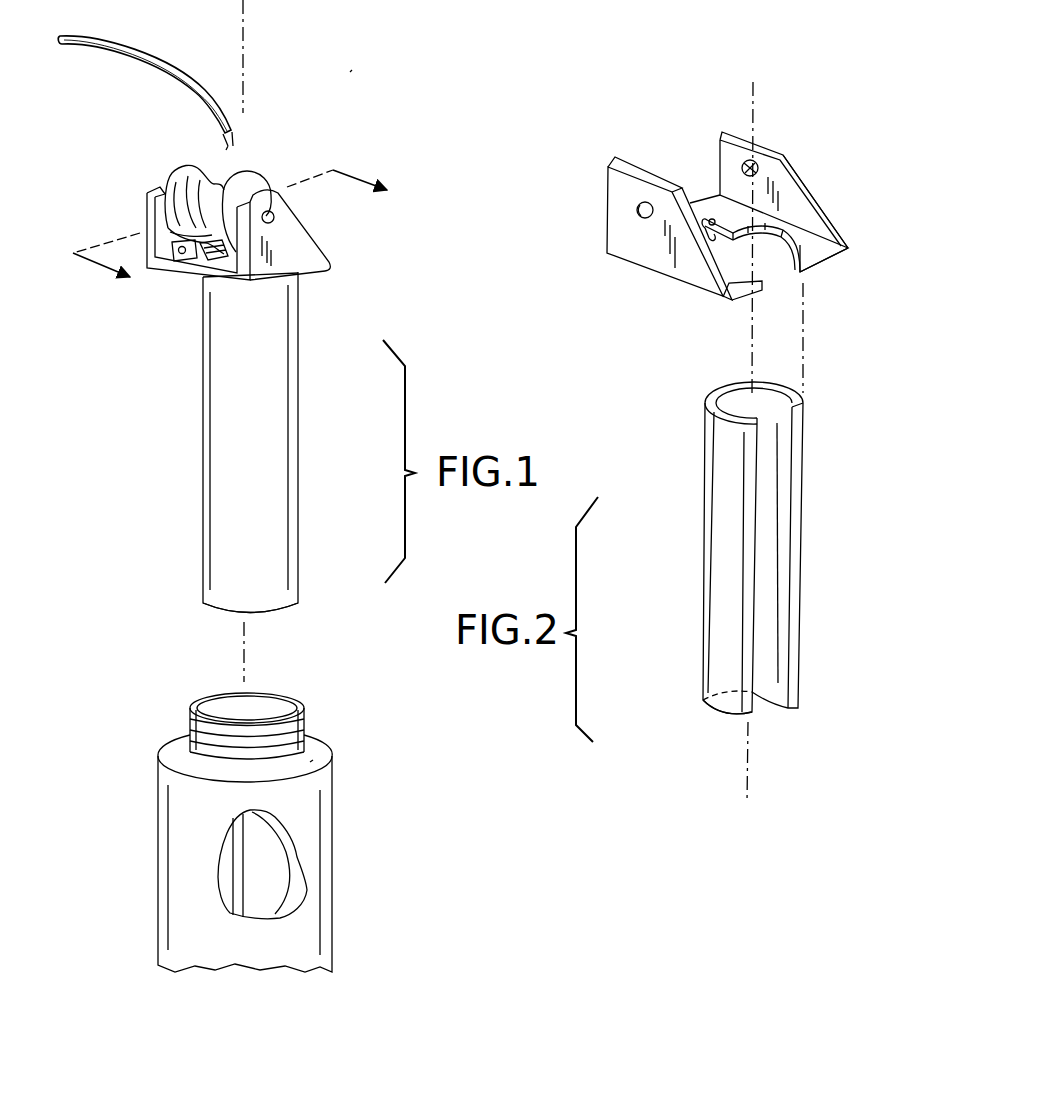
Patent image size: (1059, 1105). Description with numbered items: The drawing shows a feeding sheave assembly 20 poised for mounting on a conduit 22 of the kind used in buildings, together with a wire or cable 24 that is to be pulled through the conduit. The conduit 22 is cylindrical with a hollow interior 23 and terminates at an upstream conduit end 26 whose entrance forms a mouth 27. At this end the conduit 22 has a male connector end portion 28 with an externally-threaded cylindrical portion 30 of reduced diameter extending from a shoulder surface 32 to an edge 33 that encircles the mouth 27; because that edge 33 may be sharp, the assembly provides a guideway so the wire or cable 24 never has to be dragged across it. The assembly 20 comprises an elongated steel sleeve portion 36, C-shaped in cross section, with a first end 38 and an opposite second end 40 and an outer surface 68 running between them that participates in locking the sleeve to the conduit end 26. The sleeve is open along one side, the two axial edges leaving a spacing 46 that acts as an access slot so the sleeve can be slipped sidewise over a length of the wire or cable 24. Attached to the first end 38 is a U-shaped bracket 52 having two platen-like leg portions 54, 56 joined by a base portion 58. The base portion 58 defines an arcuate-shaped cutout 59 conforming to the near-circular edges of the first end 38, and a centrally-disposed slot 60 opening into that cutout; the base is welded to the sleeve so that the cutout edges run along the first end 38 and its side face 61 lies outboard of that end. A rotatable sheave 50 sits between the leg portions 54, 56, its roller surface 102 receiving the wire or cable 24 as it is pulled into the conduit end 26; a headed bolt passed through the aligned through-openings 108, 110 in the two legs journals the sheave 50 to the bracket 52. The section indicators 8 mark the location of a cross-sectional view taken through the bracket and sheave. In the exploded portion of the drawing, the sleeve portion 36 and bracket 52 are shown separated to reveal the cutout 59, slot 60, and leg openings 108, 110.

In FIG. 1, the feeding sheave assembly 20 is at (352, 70).
In FIG. 1, the section line 8 is at (240, 237).
In FIG. 1, the conduit 22 is at (176, 846).
In FIG. 1, the hollow interior 23 is at (290, 870).
In FIG. 1, the wire or cable 24 is at (120, 62).
In FIG. 1, the conduit end 26 is at (306, 712).
In FIG. 1, the mouth 27 is at (223, 708).
In FIG. 1, the male connector end portion 28 is at (192, 726).
In FIG. 1, the externally-threaded cylindrical portion 30 is at (306, 734).
In FIG. 1, the shoulder surface 32 is at (315, 760).
In FIG. 1, the edge 33 is at (196, 708).
In FIG. 1, the sleeve portion 36 is at (235, 478).
In FIG. 2, the sleeve portion 36 is at (720, 556).
In FIG. 1, the first end 38 is at (285, 288).
In FIG. 2, the first end 38 is at (793, 383).
In FIG. 1, the second end 40 is at (275, 617).
In FIG. 2, the second end 40 is at (775, 700).
In FIG. 2, the spacing 46 is at (785, 502).
In FIG. 1, the sheave 50 is at (250, 170).
In FIG. 1, the bracket 52 is at (295, 245).
In FIG. 2, the bracket 52 is at (805, 185).
In FIG. 2, the leg portion 54 is at (620, 230).
In FIG. 2, the leg portion 56 is at (823, 207).
In FIG. 2, the base portion 58 is at (812, 267).
In FIG. 2, the arcuate-shaped cutout 59 is at (792, 250).
In FIG. 2, the slot 60 is at (712, 220).
In FIG. 2, the side face 61 is at (725, 303).
In FIG. 1, the outer surface 68 is at (230, 362).
In FIG. 2, the outer surface 68 is at (704, 455).
In FIG. 1, the roller surface 102 is at (178, 185).
In FIG. 2, the through-opening 108 is at (610, 175).
In FIG. 2, the through-opening 110 is at (740, 130).